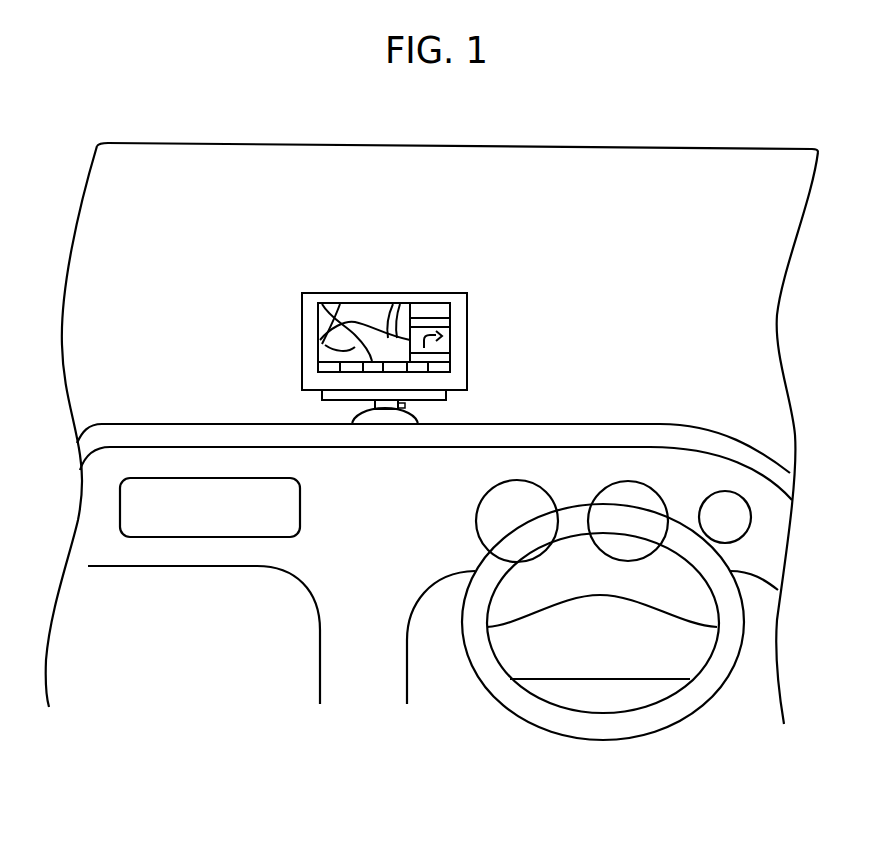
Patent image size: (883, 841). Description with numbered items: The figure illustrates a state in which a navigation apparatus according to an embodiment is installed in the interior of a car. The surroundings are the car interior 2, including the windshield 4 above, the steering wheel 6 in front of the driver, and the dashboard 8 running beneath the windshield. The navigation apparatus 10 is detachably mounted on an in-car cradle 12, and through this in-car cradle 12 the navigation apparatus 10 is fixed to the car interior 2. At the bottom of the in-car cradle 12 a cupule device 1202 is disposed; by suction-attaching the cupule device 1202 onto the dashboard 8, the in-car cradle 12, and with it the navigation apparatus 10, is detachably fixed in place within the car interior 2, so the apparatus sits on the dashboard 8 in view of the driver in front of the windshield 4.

The car interior 2 is at (747, 301).
The windshield 4 is at (765, 205).
The steering wheel 6 is at (742, 632).
The dashboard 8 is at (562, 426).
The navigation apparatus 10 is at (438, 294).
The in-car cradle 12 is at (445, 401).
The cupule device 1202 is at (353, 420).